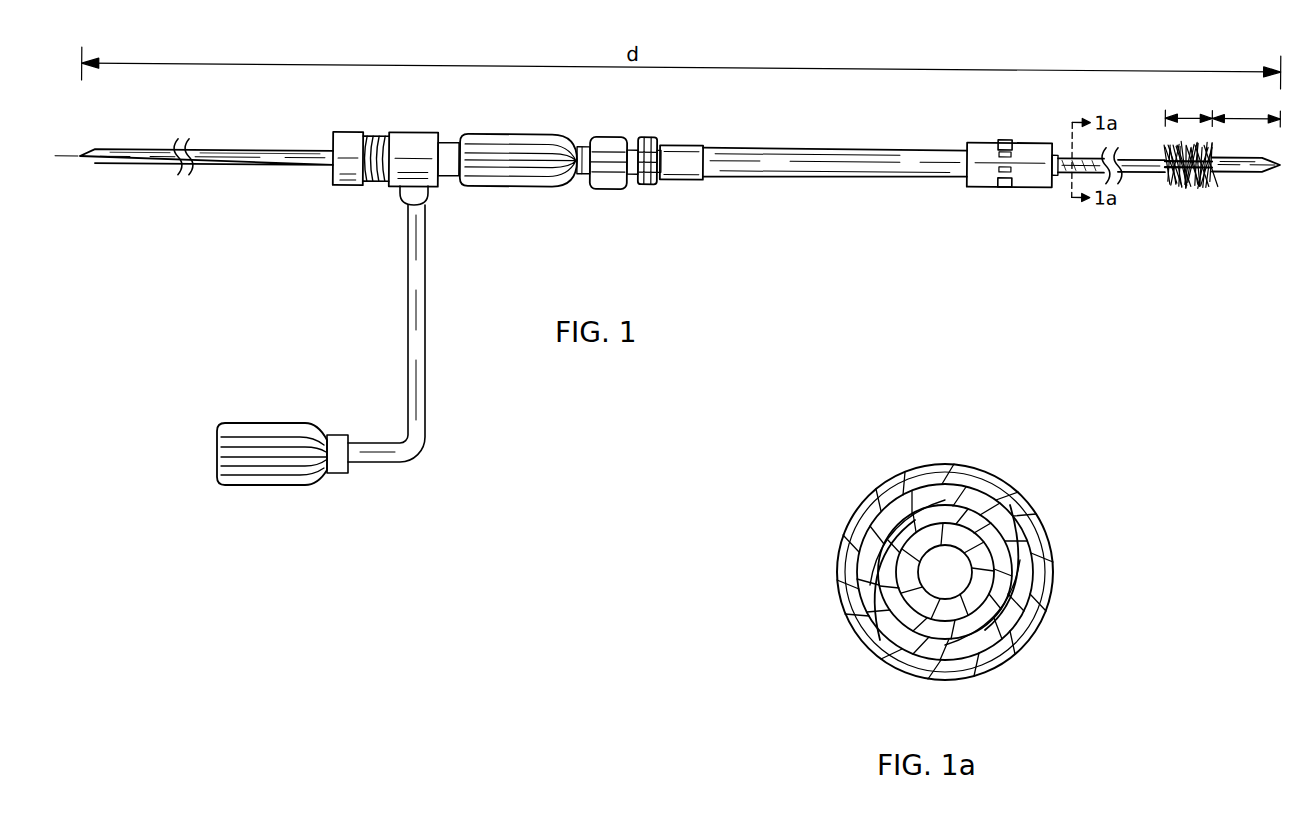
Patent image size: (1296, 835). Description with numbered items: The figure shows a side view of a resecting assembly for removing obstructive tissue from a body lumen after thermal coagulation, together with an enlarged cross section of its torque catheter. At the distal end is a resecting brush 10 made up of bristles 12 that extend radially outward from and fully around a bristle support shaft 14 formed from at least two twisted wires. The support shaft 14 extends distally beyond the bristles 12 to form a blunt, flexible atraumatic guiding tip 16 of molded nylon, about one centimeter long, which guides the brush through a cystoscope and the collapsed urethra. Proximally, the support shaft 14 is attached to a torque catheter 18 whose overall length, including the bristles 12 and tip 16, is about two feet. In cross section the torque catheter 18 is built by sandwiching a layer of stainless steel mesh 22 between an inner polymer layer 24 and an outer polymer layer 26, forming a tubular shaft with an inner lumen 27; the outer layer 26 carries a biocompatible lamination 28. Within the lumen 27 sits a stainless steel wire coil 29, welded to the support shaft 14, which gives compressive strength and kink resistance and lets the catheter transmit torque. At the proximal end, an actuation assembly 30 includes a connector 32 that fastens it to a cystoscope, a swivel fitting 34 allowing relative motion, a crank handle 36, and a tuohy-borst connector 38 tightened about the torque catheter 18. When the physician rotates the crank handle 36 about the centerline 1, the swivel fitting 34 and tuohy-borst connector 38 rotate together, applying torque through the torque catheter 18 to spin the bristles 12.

In FIG. 1, the centerline 1 is at (67, 156).
In FIG. 1, the resecting brush 10 is at (1169, 188).
In FIG. 1, the bristles 12 is at (1169, 168).
In FIG. 1, the bristle support shaft 14 is at (1170, 150).
In FIG. 1, the atraumatic guiding tip 16 is at (1246, 190).
In FIG. 1, the torque catheter 18 is at (1140, 165).
In FIG. 1a, the stainless steel mesh 22 is at (990, 515).
In FIG. 1a, the inner polymer layer 24 is at (993, 605).
In FIG. 1a, the outer polymer layer 26 is at (1030, 578).
In FIG. 1a, the inner lumen 27 is at (953, 590).
In FIG. 1a, the lamination 28 is at (1040, 547).
In FIG. 1a, the wire coil 29 is at (905, 585).
In FIG. 1, the actuation assembly 30 is at (505, 398).
In FIG. 1, the connector 32 is at (680, 177).
In FIG. 1, the swivel fitting 34 is at (525, 183).
In FIG. 1, the crank handle 36 is at (295, 423).
In FIG. 1, the tuohy-borst connector 38 is at (348, 185).